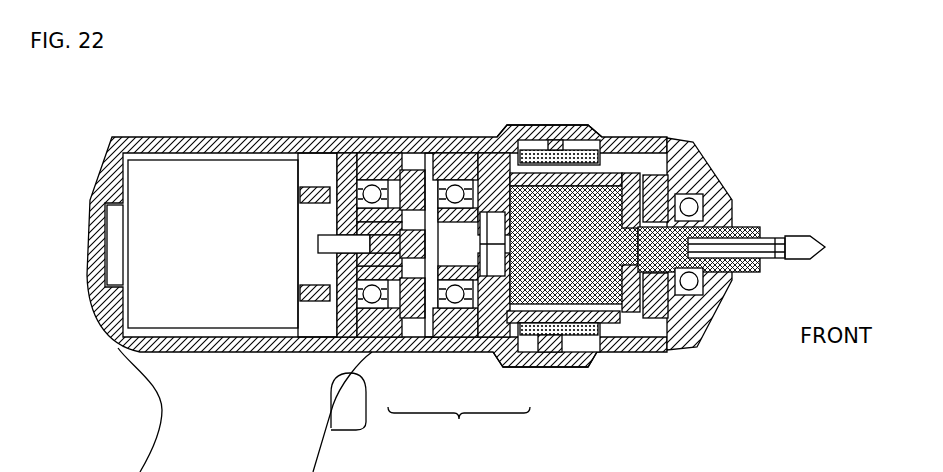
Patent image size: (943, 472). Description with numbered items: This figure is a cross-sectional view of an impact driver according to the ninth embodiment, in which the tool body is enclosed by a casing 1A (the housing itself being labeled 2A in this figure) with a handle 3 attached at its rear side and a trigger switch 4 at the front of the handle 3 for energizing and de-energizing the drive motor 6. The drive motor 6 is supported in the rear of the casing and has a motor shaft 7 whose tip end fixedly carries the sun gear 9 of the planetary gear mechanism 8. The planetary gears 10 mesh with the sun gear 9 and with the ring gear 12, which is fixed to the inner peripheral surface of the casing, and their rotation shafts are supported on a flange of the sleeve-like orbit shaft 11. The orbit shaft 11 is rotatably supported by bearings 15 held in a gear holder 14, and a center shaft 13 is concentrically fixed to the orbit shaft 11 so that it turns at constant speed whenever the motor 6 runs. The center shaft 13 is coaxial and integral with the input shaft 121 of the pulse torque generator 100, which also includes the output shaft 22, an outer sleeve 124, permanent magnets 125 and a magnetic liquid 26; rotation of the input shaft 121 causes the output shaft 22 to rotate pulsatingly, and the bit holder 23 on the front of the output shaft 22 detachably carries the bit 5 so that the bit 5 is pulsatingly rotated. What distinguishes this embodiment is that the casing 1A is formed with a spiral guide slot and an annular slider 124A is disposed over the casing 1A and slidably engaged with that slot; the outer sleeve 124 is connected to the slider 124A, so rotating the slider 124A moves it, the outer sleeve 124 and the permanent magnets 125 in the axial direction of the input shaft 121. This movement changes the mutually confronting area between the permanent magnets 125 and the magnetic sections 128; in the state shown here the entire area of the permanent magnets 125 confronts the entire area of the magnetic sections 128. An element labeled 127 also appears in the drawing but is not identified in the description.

The casing 1A is at (235, 76).
The housing 2A is at (401, 130).
The handle 3 is at (165, 440).
The trigger switch 4 is at (343, 417).
The bit 5 is at (807, 262).
The drive motor 6 is at (176, 178).
The motor shaft 7 is at (337, 243).
The planetary gear mechanism 8 is at (459, 426).
The sun gear 9 is at (332, 283).
The planetary gears 10 is at (420, 353).
The orbit shaft 11 is at (457, 250).
The ring gear 12 is at (437, 353).
The center shaft 13 is at (500, 352).
The gear holder 14 is at (449, 150).
The bearings 15 is at (364, 137).
The output shaft 22 is at (683, 305).
The bit holder 23 is at (756, 227).
The magnetic liquid 26 is at (640, 352).
The pulse torque generator 100 is at (614, 110).
The input shaft 121 is at (538, 355).
The outer sleeve 124 is at (636, 143).
The annular slider 124A is at (526, 128).
The permanent magnets 125 is at (662, 137).
The rear wall 127 is at (672, 355).
The magnetic sections 128 is at (591, 353).